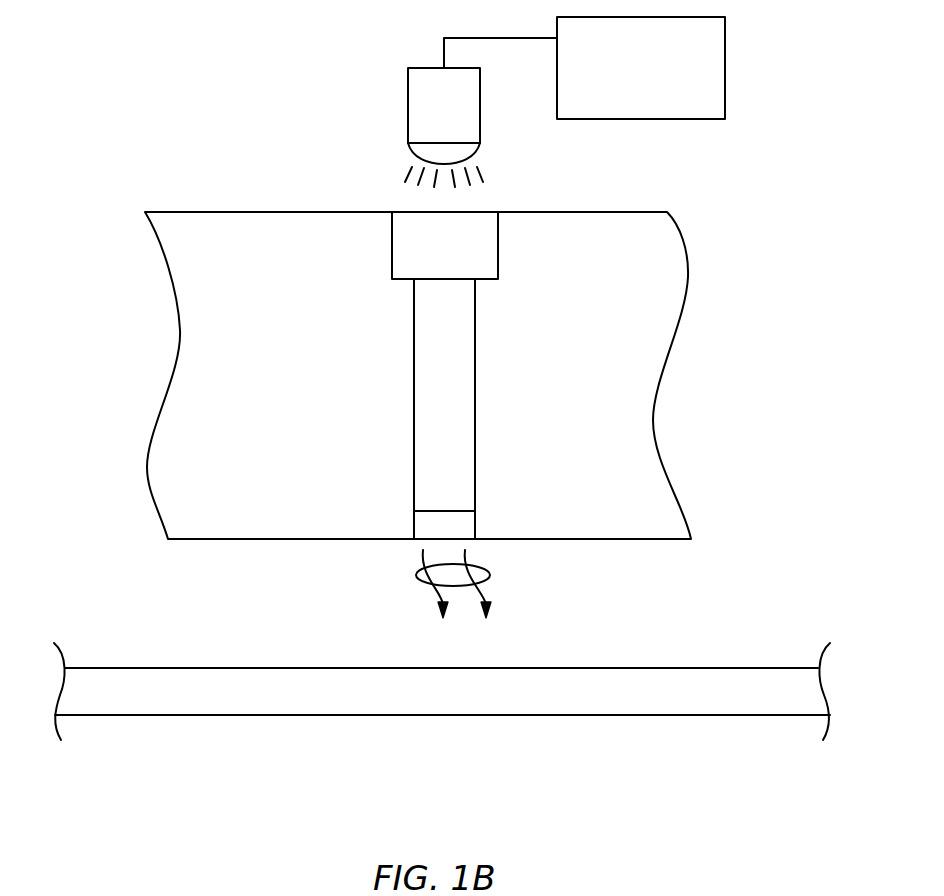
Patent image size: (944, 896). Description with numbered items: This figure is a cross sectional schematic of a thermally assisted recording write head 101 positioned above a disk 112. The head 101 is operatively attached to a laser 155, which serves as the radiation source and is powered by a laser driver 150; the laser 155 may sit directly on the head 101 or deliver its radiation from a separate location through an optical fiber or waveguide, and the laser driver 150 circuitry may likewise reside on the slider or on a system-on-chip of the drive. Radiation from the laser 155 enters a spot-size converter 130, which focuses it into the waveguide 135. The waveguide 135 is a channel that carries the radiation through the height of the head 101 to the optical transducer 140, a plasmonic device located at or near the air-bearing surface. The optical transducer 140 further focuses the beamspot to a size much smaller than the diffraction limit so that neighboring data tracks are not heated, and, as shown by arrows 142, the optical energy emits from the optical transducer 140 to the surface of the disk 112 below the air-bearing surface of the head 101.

The TAR enabled write head 101 is at (213, 177).
The disk 112 is at (223, 715).
The spot-size converter 130 is at (392, 237).
The waveguide 135 is at (414, 353).
The optical transducer 140 is at (414, 523).
The arrows 142 is at (420, 577).
The laser driver 150 is at (725, 69).
The laser 155 is at (408, 98).